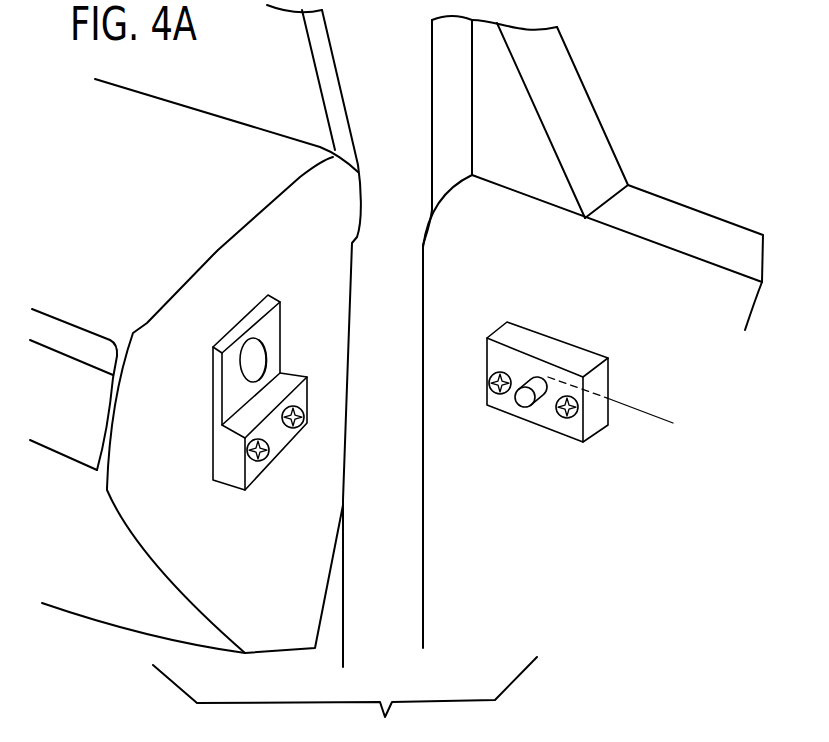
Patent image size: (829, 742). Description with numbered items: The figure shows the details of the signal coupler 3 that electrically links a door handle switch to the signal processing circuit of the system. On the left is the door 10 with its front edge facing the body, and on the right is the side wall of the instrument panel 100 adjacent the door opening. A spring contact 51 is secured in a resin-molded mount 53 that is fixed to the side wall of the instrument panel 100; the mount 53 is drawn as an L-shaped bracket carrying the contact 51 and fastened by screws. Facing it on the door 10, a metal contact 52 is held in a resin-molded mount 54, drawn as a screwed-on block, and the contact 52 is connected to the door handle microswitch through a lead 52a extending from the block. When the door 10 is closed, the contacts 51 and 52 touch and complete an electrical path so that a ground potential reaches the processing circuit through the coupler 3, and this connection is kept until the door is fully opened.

The instrument panel 100 is at (273, 645).
The door 10 is at (697, 257).
The signal coupler 3 is at (573, 377).
The spring contact 51 is at (253, 347).
The resin-molded mount 53 is at (256, 403).
The resin-molded mount 54 is at (573, 350).
The metal contact 52 is at (525, 407).
The lead 52a is at (653, 418).